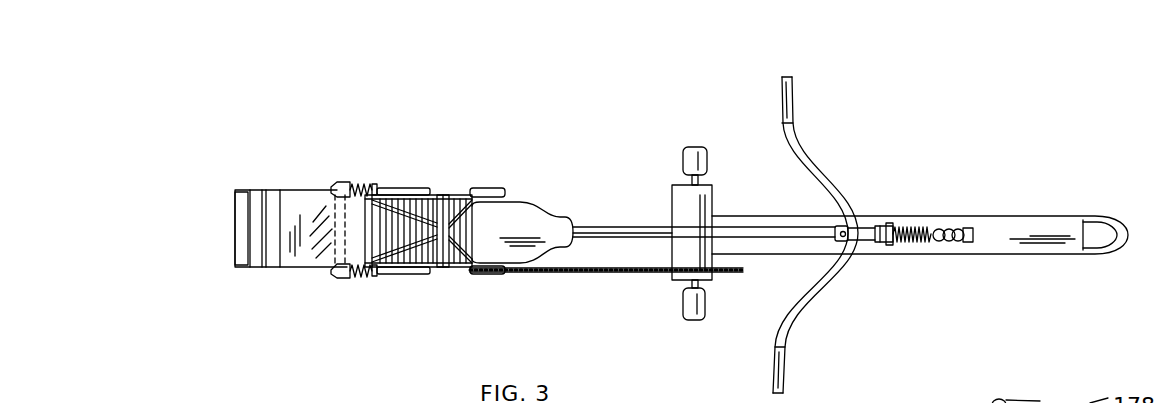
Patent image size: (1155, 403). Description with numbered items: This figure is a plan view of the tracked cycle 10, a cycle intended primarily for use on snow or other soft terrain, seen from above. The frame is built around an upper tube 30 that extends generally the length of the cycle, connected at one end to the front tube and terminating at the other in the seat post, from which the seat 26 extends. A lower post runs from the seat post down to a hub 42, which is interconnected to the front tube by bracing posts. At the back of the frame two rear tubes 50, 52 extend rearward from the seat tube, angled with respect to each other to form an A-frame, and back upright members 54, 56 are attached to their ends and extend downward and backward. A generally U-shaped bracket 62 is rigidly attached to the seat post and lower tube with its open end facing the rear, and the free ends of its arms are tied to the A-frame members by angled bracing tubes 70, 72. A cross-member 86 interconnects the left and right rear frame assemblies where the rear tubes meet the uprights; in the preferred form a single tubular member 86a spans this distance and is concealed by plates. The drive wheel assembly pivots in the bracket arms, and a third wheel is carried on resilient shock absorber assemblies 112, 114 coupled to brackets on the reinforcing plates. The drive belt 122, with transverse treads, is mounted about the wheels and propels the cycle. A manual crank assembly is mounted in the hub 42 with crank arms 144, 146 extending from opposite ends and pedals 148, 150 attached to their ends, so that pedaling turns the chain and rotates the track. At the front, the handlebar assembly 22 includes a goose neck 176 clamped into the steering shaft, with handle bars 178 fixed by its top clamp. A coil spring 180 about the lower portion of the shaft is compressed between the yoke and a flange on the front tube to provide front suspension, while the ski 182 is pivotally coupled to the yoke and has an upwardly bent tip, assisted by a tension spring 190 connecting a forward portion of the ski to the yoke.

The tracked cycle 10 is at (946, 73).
The handlebar assembly 22 is at (878, 181).
The seat 26 is at (548, 220).
The upper tube 30 is at (608, 233).
The hub 42 is at (718, 196).
The rear tube 50 is at (406, 197).
The rear tube 52 is at (410, 268).
The back upright member 54 is at (270, 188).
The back upright member 56 is at (267, 268).
The U-shaped bracket 62 is at (514, 180).
The angled bracing tube 70 is at (447, 200).
The angled bracing tube 72 is at (455, 268).
The cross-member 86 is at (300, 200).
The tubular member 86a is at (315, 267).
The shock absorber assembly 112 is at (362, 183).
The shock absorber assembly 114 is at (362, 278).
The drive belt 122 is at (240, 226).
The crank arm 144 is at (708, 185).
The crank arm 146 is at (680, 283).
The pedal 148 is at (685, 152).
The pedal 150 is at (703, 312).
The goose neck 176 is at (838, 242).
The handle bars 178 is at (808, 160).
The coil spring 180 is at (918, 246).
The ski 182 is at (1010, 242).
The tension spring 190 is at (955, 228).